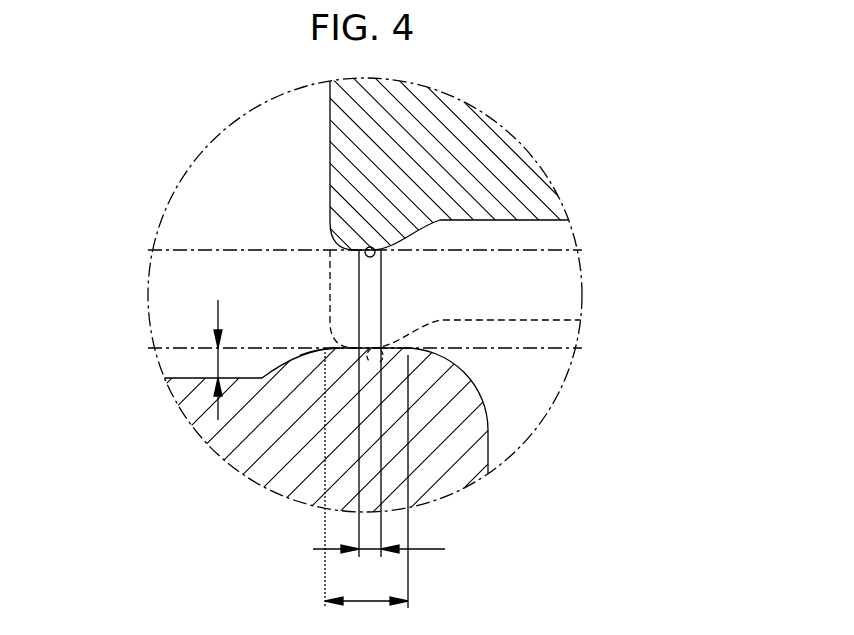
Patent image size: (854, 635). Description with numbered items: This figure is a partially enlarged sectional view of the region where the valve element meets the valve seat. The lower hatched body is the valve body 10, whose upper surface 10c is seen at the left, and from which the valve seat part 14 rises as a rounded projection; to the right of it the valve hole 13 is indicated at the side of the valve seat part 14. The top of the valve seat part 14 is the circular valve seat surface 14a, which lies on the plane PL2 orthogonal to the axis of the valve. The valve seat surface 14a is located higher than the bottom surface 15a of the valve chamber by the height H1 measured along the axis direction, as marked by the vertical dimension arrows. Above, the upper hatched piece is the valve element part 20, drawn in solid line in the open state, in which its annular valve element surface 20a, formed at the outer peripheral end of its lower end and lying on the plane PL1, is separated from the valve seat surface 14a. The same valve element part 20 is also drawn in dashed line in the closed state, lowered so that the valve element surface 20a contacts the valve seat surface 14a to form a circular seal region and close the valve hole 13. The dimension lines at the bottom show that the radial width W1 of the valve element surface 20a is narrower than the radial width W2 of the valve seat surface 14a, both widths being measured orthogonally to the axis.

The valve body 10 is at (427, 317).
The upper surface of valve body 10c is at (195, 412).
The valve hole 13 is at (490, 446).
The valve seat part 14 is at (412, 356).
The valve seat surface 14a is at (336, 348).
The bottom surface of valve chamber 15a is at (256, 378).
The valve element part 20 is at (330, 181).
The valve element surface 20a is at (375, 249).
The plane PL1 is at (176, 250).
The plane PL2 is at (176, 348).
The height H1 is at (237, 360).
The radial width W1 is at (384, 403).
The radial width W2 is at (366, 478).